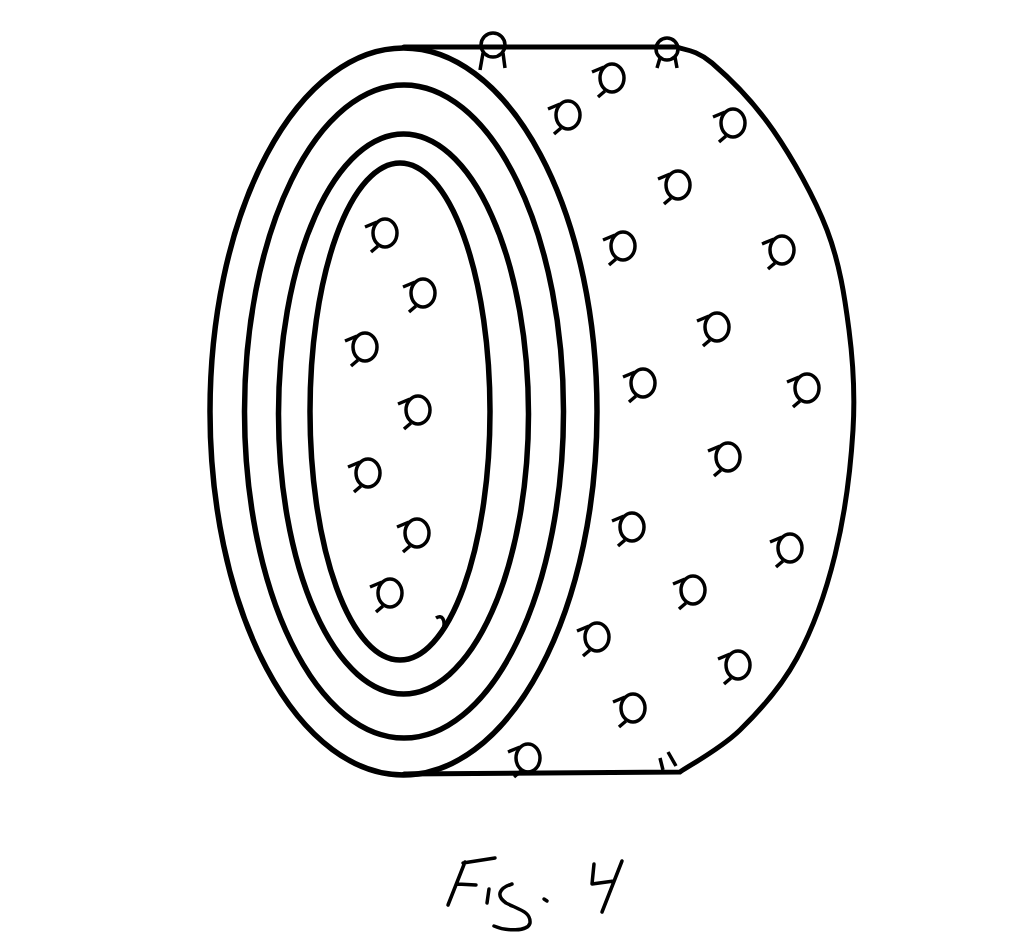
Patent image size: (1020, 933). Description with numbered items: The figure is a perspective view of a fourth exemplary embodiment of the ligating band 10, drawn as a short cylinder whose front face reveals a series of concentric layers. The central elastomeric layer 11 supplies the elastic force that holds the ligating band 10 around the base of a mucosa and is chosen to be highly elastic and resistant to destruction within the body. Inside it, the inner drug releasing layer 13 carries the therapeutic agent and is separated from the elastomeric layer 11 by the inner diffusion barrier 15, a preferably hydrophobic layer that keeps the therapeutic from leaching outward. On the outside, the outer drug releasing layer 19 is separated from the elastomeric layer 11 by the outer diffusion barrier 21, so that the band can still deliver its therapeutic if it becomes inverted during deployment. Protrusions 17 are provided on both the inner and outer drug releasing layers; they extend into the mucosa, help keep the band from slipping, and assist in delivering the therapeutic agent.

The ligating band 10 is at (163, 364).
The elastomeric layer 11 is at (330, 150).
The inner drug releasing layer 13 is at (318, 578).
The inner diffusion barrier 15 is at (300, 252).
The protrusions 17 is at (803, 246).
The outer drug releasing layer 19 is at (230, 505).
The outer diffusion barrier 21 is at (280, 210).